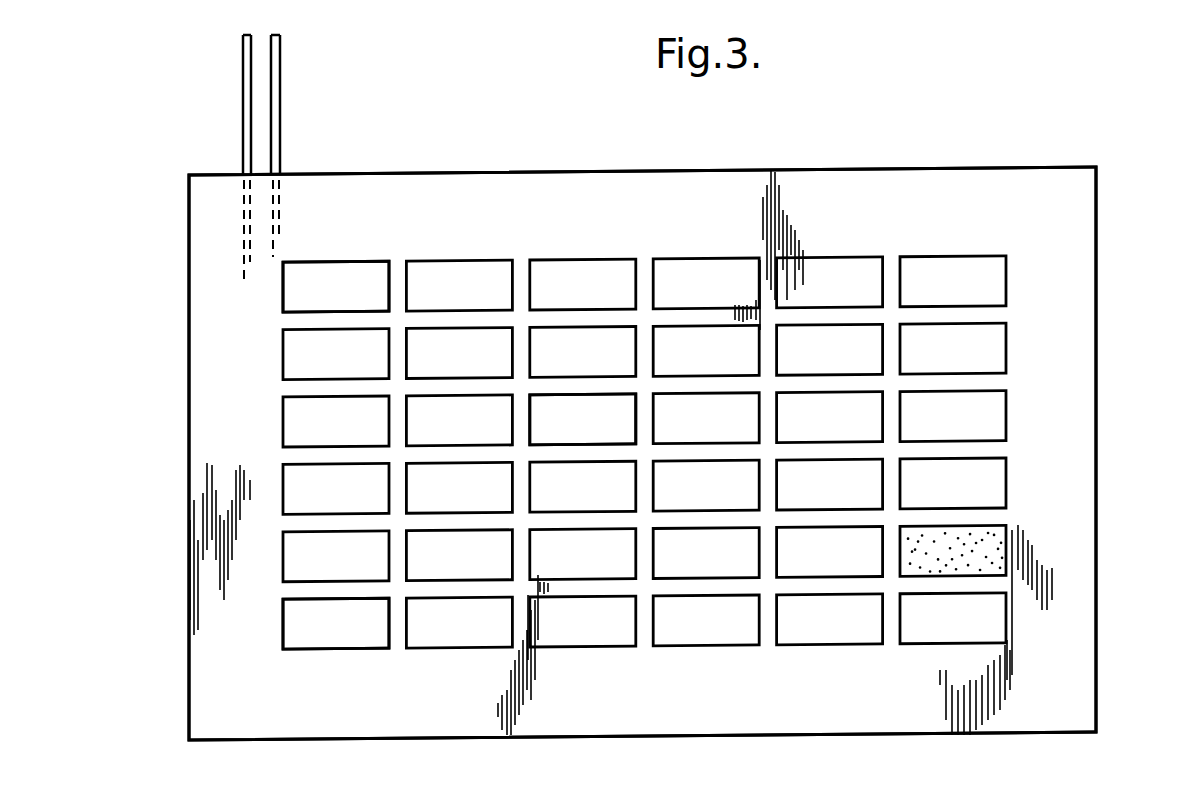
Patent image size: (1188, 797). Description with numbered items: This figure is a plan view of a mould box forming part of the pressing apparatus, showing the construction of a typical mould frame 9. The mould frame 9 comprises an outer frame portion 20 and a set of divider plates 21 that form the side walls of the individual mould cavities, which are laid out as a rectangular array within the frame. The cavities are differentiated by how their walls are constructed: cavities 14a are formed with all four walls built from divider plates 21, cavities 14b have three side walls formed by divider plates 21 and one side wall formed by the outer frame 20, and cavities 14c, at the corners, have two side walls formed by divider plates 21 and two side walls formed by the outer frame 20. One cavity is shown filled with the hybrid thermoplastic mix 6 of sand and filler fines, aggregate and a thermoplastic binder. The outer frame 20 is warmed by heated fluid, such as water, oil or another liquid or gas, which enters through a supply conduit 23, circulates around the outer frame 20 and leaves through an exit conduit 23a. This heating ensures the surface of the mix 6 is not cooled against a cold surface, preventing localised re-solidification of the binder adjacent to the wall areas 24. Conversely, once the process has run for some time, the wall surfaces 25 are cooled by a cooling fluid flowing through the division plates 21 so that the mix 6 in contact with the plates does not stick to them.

The hybrid thermoplastic mix 6 is at (970, 558).
The mould frame 9 is at (1104, 343).
The mould cavity 14a is at (490, 438).
The mould cavity 14b is at (490, 303).
The mould cavity 14c is at (367, 303).
The outer frame portion 20 is at (1067, 463).
The divider plate 21 is at (815, 313).
The supply conduit 23 is at (281, 138).
The exit conduit 23a is at (245, 118).
The wall area 24 is at (295, 426).
The wall surface 25 is at (398, 293).